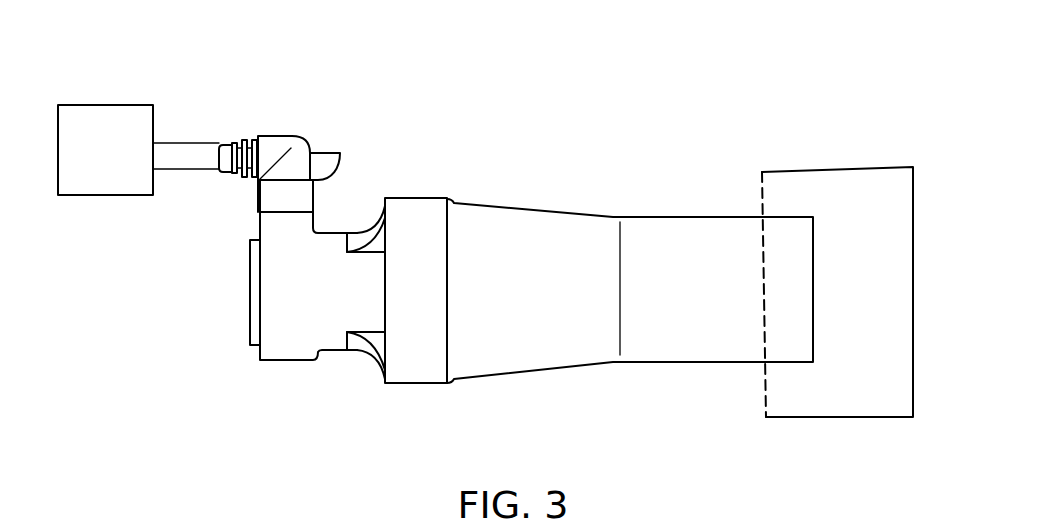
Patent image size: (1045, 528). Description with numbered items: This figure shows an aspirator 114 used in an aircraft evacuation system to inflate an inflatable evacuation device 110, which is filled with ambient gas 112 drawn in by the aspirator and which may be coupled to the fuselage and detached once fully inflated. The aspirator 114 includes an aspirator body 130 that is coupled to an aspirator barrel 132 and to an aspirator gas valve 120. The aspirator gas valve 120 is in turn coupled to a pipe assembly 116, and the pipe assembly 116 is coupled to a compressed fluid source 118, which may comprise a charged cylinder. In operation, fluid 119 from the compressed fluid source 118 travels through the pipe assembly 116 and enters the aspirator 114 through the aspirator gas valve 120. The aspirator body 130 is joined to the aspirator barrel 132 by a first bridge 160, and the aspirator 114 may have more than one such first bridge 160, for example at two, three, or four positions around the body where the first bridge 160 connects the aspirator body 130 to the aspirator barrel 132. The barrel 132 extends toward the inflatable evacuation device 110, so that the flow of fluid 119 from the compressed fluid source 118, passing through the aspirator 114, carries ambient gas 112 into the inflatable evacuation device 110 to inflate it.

The inflatable evacuation device 110 is at (885, 187).
The ambient gas 112 is at (498, 300).
The aspirator 114 is at (581, 129).
The pipe assembly 116 is at (192, 153).
The compressed fluid source 118 is at (91, 113).
The fluid 119 is at (88, 164).
The aspirator gas valve 120 is at (293, 145).
The aspirator body 130 is at (282, 362).
The aspirator barrel 132 is at (708, 233).
The first bridge 160 is at (358, 353).